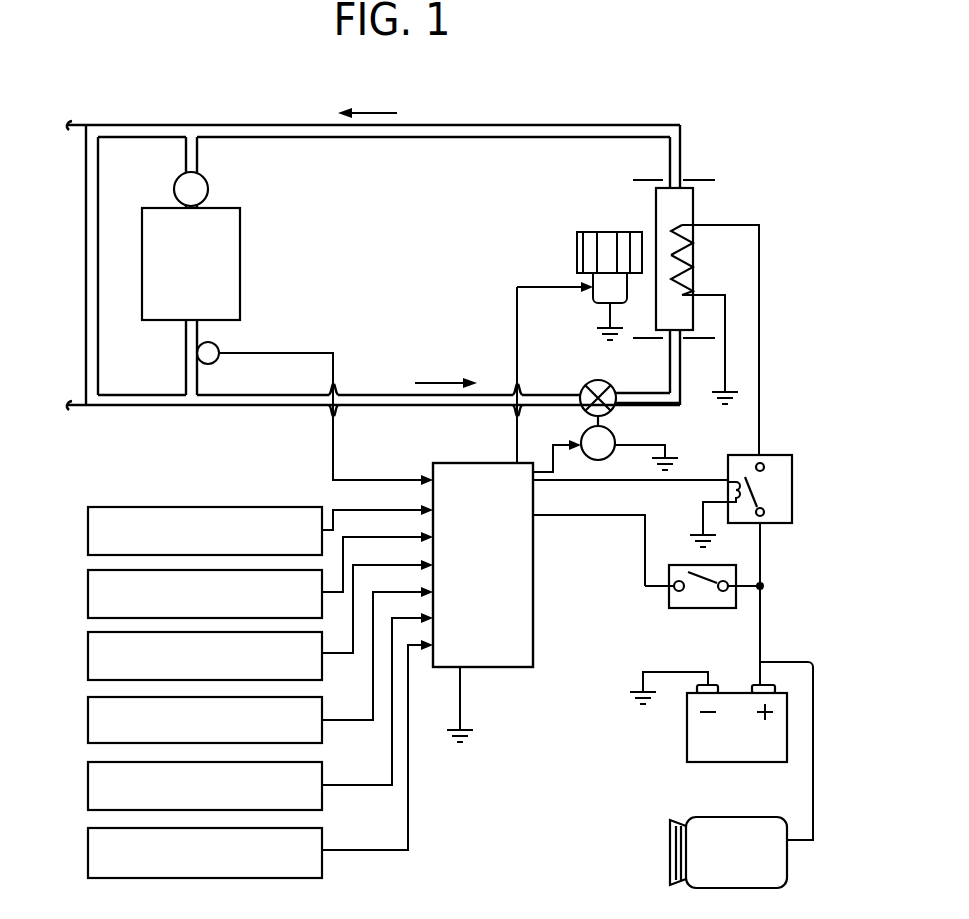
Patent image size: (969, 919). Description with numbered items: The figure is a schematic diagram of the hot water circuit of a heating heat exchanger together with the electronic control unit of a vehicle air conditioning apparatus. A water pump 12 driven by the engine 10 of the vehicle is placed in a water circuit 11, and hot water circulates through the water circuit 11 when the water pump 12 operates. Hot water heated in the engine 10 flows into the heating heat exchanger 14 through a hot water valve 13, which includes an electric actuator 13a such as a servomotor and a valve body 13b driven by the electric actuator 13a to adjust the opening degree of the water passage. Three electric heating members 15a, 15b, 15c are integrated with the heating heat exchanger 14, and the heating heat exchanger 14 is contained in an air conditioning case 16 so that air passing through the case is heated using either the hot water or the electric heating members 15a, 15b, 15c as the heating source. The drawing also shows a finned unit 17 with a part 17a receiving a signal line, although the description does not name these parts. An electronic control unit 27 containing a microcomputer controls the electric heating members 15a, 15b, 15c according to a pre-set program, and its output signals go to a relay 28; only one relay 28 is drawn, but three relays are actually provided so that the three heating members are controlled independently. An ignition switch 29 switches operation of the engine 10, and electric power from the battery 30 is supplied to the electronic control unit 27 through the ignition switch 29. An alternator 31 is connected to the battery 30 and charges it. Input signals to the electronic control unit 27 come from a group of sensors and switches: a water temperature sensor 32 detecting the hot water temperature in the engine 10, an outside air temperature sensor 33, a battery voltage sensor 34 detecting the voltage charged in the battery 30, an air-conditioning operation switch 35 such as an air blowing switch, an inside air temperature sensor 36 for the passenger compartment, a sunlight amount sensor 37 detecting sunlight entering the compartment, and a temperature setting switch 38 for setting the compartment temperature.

The engine 10 is at (240, 263).
The water circuit 11 is at (269, 124).
The water pump 12 is at (208, 188).
The hot water valve 13 is at (588, 426).
The electric actuator 13a is at (618, 438).
The valve body 13b is at (587, 388).
The heating heat exchanger 14 is at (680, 207).
The electric heating member 15a is at (752, 327).
The electric heating member 15b is at (682, 240).
The electric heating member 15c is at (690, 262).
The air conditioning case 16 is at (701, 178).
The auxiliary heat generating unit 17 is at (603, 232).
The drive circuit of heat generating unit 17a is at (594, 301).
The electronic control unit (ECU) 27 is at (533, 565).
The relay 28 is at (795, 492).
The ignition switch 29 is at (701, 610).
The battery 30 is at (687, 745).
The alternator 31 is at (670, 853).
The water temperature sensor 32 is at (215, 361).
The outside air temperature sensor 33 is at (88, 528).
The battery voltage sensor 34 is at (88, 590).
The air-conditioning operation switch 35 is at (88, 653).
The inside air temperature sensor 36 is at (88, 716).
The sunlight amount sensor 37 is at (88, 781).
The temperature setting switch 38 is at (88, 847).